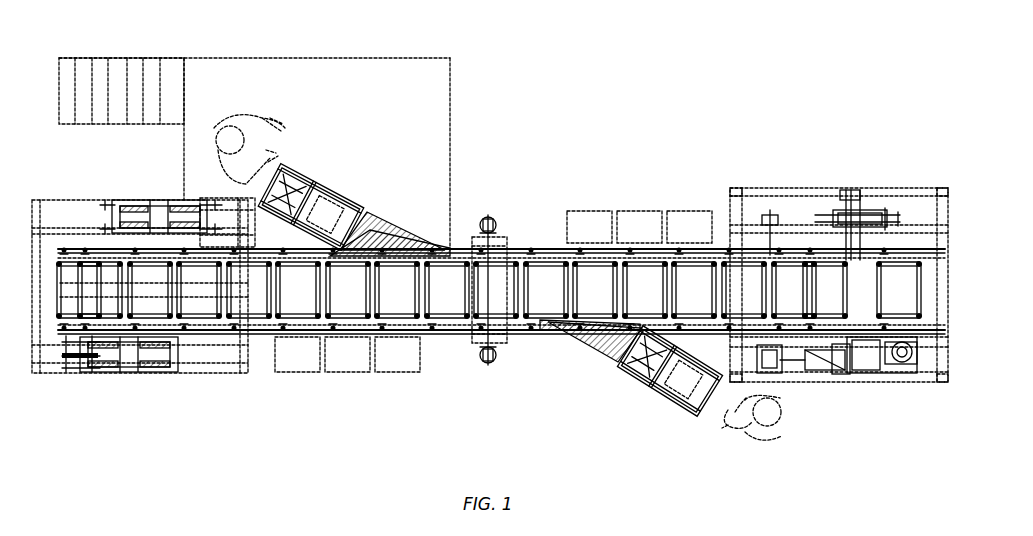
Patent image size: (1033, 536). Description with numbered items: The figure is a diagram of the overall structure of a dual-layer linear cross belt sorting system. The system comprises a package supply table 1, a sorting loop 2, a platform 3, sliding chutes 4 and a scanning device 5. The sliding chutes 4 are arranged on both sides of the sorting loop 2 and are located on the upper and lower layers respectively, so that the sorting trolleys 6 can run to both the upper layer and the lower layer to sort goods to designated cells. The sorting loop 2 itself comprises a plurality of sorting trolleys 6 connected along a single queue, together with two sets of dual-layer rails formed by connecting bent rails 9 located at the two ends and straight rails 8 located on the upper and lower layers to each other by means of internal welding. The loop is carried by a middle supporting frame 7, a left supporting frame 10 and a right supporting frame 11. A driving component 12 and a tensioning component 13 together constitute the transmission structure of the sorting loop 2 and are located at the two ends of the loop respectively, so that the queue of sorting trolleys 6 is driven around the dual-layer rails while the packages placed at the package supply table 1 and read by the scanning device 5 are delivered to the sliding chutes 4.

The package supply table 1 is at (333, 227).
The sorting loop 2 is at (500, 266).
The platform 3 is at (320, 80).
The sliding chutes 4 is at (683, 220).
The scanning device 5 is at (503, 235).
The sorting trolleys 6 is at (443, 303).
The middle supporting frame 7 is at (490, 363).
The straight rails 8 is at (518, 320).
The bent rails 9 is at (845, 373).
The left supporting frame 10 is at (150, 373).
The right supporting frame 11 is at (940, 383).
The driving component 12 is at (868, 372).
The tensioning component 13 is at (82, 373).